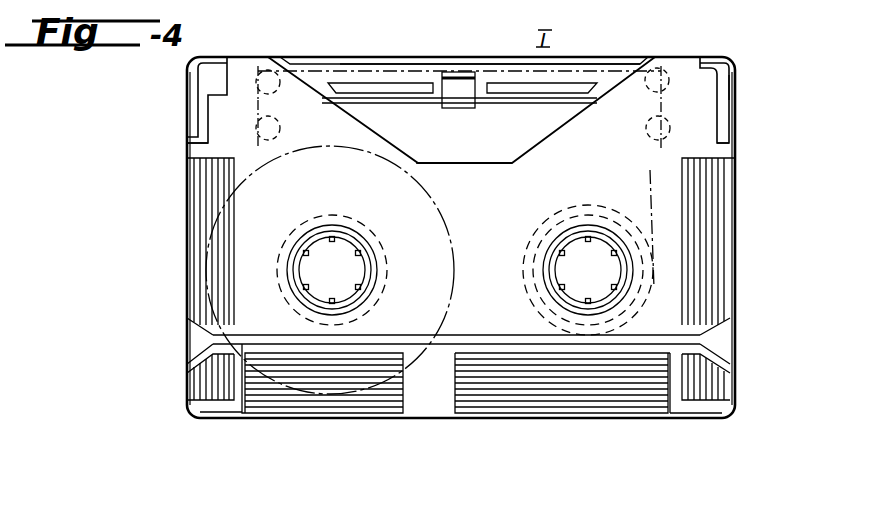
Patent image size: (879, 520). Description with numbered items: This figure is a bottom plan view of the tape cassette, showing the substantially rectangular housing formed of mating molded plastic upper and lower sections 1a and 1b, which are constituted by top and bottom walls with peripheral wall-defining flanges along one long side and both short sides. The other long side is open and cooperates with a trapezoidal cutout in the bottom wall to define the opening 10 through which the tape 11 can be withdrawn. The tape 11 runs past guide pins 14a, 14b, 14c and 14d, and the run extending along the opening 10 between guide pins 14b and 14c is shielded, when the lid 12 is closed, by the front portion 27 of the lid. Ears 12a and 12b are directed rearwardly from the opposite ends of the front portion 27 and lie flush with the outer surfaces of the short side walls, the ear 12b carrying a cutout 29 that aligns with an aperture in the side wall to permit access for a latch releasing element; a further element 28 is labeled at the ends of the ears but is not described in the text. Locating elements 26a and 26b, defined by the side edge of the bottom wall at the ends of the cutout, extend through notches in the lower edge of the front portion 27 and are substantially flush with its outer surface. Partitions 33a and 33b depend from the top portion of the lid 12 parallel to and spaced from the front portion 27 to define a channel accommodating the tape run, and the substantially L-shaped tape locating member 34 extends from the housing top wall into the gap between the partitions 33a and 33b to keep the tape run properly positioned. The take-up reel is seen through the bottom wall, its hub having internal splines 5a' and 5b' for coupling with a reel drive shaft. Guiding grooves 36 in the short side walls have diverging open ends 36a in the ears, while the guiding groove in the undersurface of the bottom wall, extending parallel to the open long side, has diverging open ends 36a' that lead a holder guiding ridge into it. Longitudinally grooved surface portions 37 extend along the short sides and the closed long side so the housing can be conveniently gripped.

The upper section 1a is at (391, 116).
The lower section 1b is at (186, 238).
The spline 5a' is at (430, 270).
The spline 5b' is at (475, 231).
The opening 10 is at (478, 160).
The tape 11 is at (304, 58).
The lid 12 is at (552, 57).
The ear 12a is at (193, 72).
The ear 12b is at (735, 110).
The guide pin 14a is at (292, 140).
The guide pin 14b is at (262, 78).
The guide pin 14c is at (647, 89).
The guide pin 14d is at (662, 127).
The locating element 26a is at (249, 57).
The locating element 26b is at (603, 56).
The front portion 27 is at (428, 58).
The guide wall end 28 is at (193, 128).
The cutout 29 is at (732, 90).
The partition 33a is at (354, 83).
The partition 33b is at (508, 83).
The tape locating member 34 is at (458, 98).
The groove 36 is at (462, 340).
The diverging open end 36a is at (185, 345).
The diverging open end 36a' is at (740, 342).
The grooved surface portion 37 is at (208, 178).